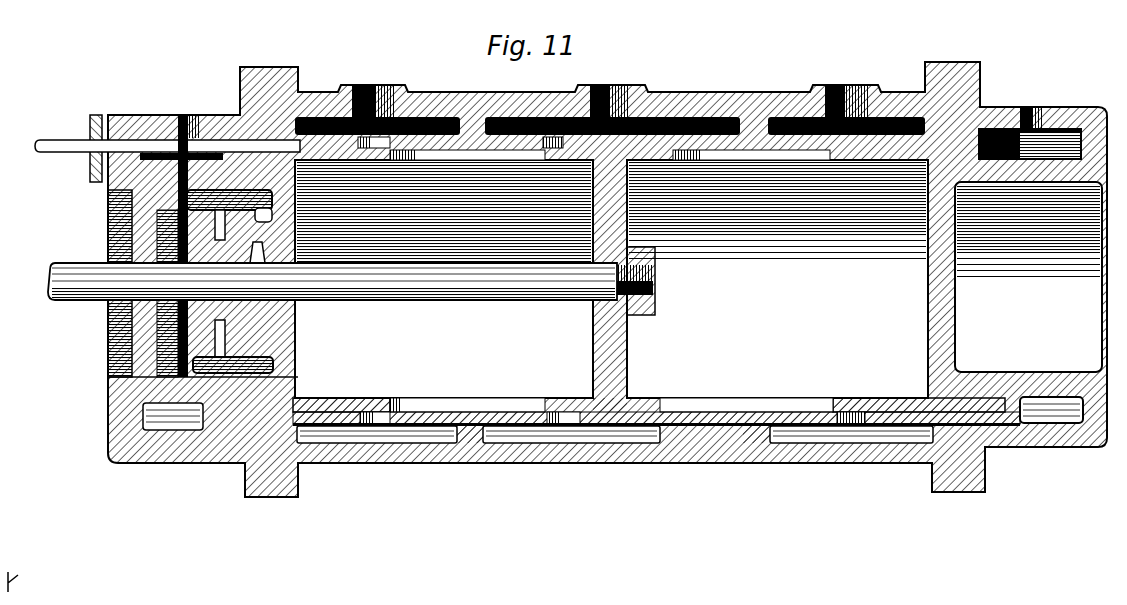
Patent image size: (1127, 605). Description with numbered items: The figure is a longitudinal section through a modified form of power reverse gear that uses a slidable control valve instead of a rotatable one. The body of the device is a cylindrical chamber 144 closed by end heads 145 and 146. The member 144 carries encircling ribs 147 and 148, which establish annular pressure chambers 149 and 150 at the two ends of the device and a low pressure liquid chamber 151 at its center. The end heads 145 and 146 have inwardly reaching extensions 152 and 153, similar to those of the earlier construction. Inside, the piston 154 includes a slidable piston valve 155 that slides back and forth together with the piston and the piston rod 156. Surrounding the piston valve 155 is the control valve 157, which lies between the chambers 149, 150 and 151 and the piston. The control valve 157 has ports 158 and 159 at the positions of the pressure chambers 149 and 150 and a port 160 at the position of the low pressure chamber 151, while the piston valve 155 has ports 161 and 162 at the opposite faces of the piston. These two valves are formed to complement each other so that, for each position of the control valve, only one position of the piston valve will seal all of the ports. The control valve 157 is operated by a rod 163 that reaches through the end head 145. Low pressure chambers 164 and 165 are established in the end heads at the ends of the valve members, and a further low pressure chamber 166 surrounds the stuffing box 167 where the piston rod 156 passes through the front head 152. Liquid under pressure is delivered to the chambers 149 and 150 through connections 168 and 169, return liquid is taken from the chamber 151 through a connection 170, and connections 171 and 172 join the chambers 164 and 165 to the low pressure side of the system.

The cylindrical chamber 144 is at (433, 466).
The end head 145 is at (224, 438).
The end head 146 is at (1047, 433).
The encircling rib 147 is at (473, 428).
The encircling rib 148 is at (757, 430).
The annular pressure chamber 149 is at (368, 429).
The annular pressure chamber 150 is at (848, 428).
The low pressure liquid chamber 151 is at (575, 427).
The inwardly reaching extension 152 is at (238, 387).
The inwardly reaching extension 153 is at (1050, 387).
The piston 154 is at (632, 325).
The piston valve 155 is at (330, 407).
The piston rod 156 is at (80, 270).
The control valve 157 is at (430, 415).
The port 158 is at (386, 415).
The port 159 is at (862, 423).
The port 160 is at (627, 417).
The port 161 is at (502, 405).
The port 162 is at (763, 398).
The rod 163 is at (70, 140).
The low pressure chamber 164 is at (175, 378).
The low pressure chamber 165 is at (1074, 409).
The low pressure chamber 166 is at (205, 364).
The stuffing box 167 is at (238, 306).
The connection 168 is at (378, 88).
The connection 169 is at (835, 85).
The connection 170 is at (645, 88).
The connection 171 is at (183, 115).
The connection 172 is at (1030, 107).